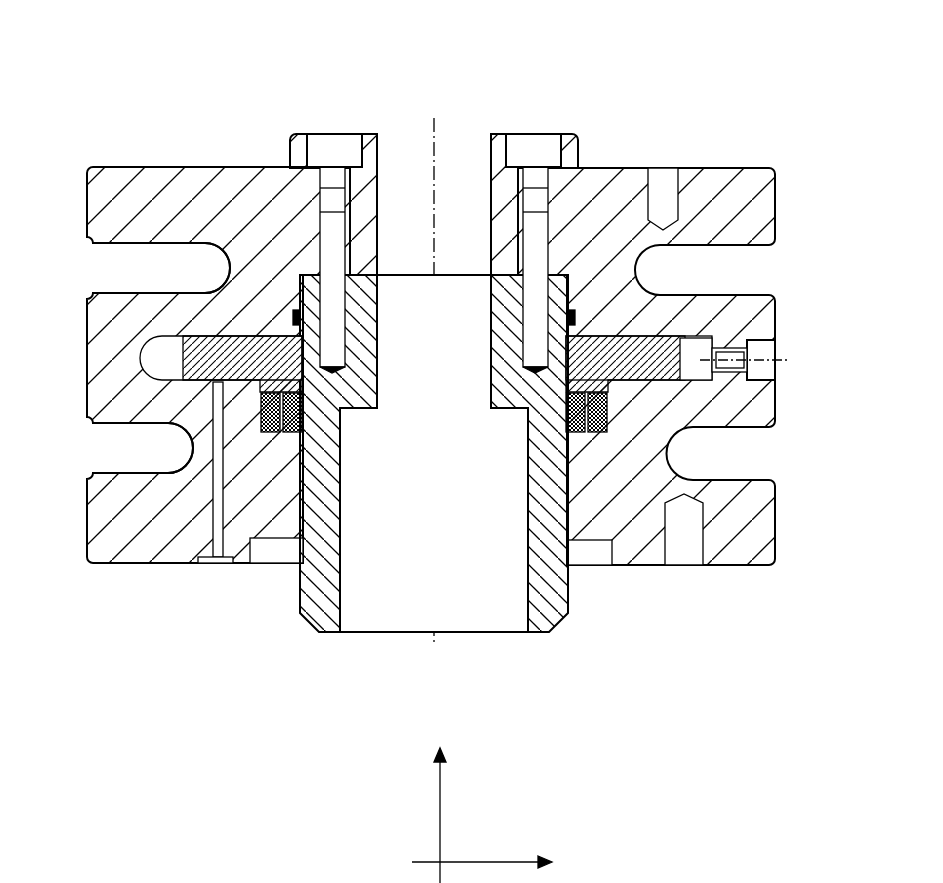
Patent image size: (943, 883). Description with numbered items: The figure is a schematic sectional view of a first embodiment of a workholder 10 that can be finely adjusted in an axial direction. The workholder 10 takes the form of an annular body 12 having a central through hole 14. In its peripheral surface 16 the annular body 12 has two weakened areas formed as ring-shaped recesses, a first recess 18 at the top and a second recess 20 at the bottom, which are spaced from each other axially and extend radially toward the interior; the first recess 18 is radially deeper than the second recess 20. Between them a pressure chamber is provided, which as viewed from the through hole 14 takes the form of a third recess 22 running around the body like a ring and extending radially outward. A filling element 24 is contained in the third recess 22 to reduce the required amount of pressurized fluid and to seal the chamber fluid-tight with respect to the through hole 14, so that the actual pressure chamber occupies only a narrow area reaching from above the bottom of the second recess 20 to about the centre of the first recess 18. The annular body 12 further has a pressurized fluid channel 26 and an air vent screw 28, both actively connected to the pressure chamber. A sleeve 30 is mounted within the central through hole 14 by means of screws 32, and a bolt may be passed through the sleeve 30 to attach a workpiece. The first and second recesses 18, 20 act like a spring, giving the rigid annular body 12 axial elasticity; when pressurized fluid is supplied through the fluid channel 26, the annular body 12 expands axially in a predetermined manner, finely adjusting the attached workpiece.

The workholder 10 is at (97, 120).
The annular body 12 is at (737, 188).
The central through hole 14 is at (426, 170).
The peripheral surface 16 is at (80, 536).
The first recess 18 is at (108, 272).
The second recess 20 is at (153, 443).
The third recess 22 is at (712, 338).
The filling element 24 is at (185, 337).
The pressurized fluid channel 26 is at (207, 564).
The air vent screw 28 is at (778, 372).
The sleeve 30 is at (553, 626).
The screws 32 is at (335, 155).